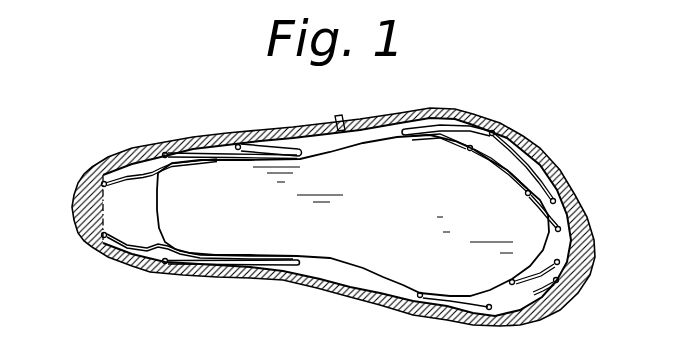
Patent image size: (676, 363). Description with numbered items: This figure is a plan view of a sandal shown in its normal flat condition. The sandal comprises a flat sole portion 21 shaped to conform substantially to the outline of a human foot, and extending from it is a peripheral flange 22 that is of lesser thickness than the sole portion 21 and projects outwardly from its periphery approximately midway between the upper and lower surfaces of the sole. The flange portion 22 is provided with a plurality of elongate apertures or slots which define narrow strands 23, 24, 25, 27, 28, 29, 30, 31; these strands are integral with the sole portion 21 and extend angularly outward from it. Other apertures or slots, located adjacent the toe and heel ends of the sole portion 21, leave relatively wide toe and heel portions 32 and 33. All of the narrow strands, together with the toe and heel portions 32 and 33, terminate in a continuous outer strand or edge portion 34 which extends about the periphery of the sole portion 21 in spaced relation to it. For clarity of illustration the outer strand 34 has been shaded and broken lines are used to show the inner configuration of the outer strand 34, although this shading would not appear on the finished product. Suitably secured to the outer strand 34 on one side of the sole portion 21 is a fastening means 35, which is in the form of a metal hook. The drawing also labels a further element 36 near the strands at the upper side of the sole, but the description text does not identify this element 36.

The sole portion 21 is at (386, 215).
The peripheral flange 22 is at (597, 255).
The narrow strand 23 is at (550, 190).
The narrow strand 24 is at (498, 132).
The narrow strand 25 is at (433, 122).
The narrow strand 27 is at (197, 160).
The narrow strand 28 is at (184, 265).
The narrow strand 29 is at (278, 268).
The narrow strand 30 is at (451, 307).
The narrow strand 31 is at (537, 283).
The toe portion 32 is at (546, 243).
The heel portion 33 is at (128, 207).
The outer strand 34 is at (377, 117).
The fastening means 35 is at (343, 113).
The spring strip 36 is at (264, 147).